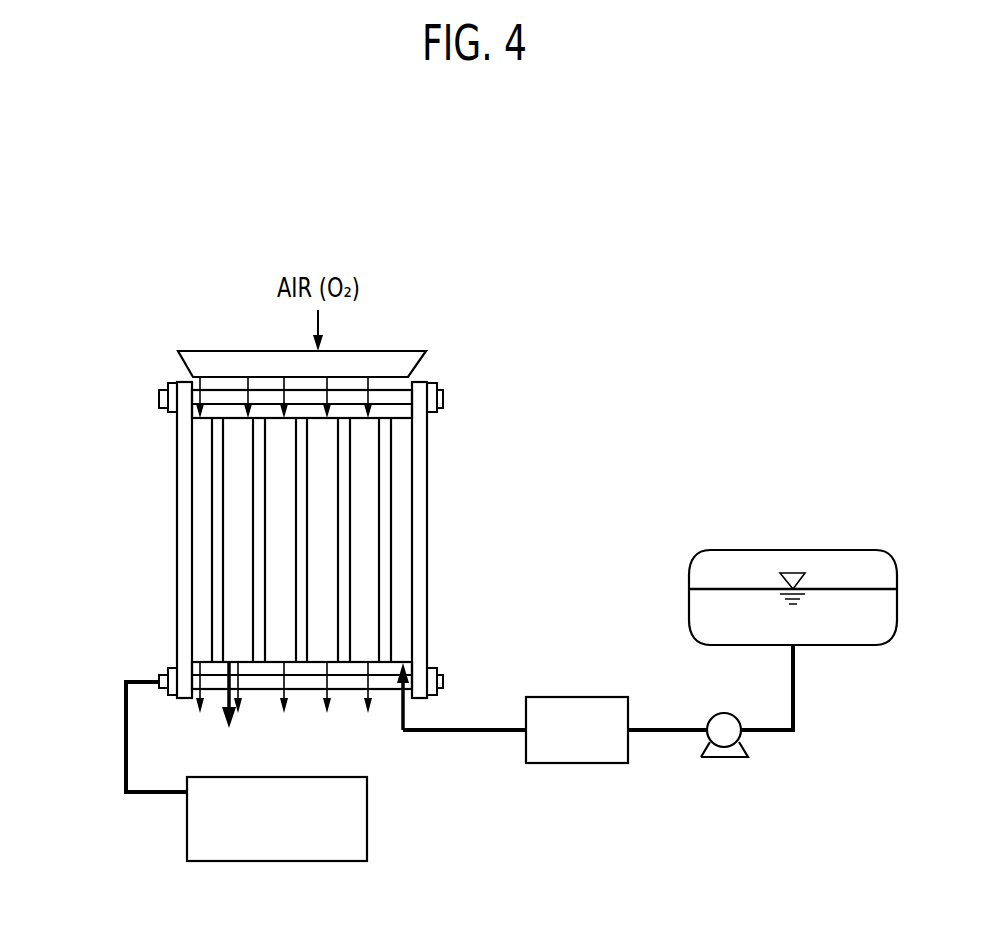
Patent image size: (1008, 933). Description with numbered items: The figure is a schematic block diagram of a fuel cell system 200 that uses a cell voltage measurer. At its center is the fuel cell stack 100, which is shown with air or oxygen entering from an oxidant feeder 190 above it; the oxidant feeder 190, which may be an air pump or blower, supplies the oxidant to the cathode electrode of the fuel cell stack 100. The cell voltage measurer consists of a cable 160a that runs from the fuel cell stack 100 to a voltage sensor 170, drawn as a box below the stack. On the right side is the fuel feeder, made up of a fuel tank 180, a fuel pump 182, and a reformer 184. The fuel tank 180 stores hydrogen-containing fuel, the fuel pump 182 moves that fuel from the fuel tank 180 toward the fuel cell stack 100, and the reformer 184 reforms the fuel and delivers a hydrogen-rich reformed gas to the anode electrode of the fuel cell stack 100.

The fuel cell system 200 is at (172, 213).
The oxidant feeder 190 is at (397, 350).
The fuel cell stack 100 is at (441, 538).
The cable 160a is at (126, 763).
The voltage sensor 170 is at (367, 817).
The reformer 184 is at (586, 697).
The fuel pump 182 is at (727, 760).
The fuel tank 180 is at (834, 550).